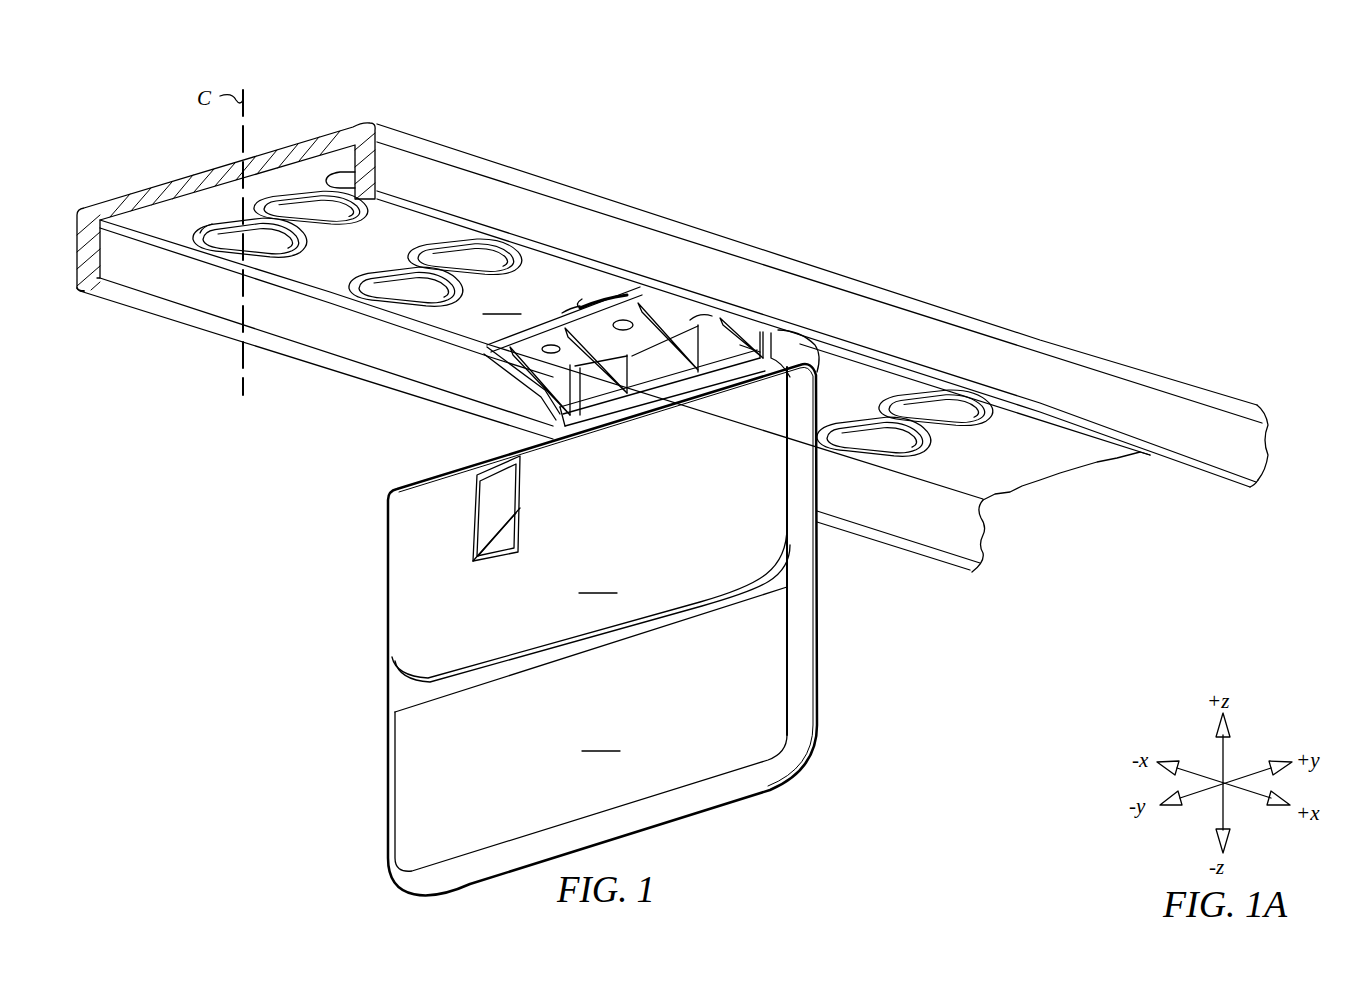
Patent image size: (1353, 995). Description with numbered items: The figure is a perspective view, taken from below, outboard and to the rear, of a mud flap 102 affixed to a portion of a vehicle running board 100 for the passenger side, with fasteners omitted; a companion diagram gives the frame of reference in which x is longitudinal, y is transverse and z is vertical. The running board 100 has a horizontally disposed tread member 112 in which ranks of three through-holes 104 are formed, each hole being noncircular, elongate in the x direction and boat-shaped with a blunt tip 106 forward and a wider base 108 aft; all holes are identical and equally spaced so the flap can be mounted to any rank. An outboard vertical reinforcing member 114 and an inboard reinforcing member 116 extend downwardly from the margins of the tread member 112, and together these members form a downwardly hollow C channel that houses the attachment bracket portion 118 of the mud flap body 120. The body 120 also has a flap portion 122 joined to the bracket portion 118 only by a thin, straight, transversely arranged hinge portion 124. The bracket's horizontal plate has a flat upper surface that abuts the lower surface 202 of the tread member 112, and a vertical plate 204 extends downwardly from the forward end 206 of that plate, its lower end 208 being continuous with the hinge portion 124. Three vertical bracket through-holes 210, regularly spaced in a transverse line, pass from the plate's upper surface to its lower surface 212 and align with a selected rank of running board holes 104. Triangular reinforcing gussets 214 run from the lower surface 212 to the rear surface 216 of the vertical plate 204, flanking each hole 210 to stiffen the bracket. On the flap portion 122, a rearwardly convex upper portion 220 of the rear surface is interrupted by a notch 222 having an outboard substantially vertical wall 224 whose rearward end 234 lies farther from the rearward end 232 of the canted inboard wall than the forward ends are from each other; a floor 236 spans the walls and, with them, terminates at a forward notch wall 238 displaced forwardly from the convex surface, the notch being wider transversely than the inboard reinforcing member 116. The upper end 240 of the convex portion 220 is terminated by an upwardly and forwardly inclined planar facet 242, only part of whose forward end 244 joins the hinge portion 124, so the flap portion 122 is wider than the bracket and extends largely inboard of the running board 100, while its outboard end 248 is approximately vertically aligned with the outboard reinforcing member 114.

The vehicle running board 100 is at (817, 339).
The mud flap 102 is at (840, 670).
The through-holes 104 is at (317, 207).
The blunt tip 106 is at (273, 267).
The wider base 108 is at (222, 252).
The tread member 112 is at (752, 156).
The outboard vertical reinforcing member 114 is at (425, 185).
The inboard reinforcing member 116 is at (135, 282).
The attachment bracket portion 118 is at (578, 305).
The mud flap body 120 is at (383, 582).
The flap portion 122 is at (591, 729).
The hinge portion 124 is at (808, 333).
The lower surface of the running board tread member 202 is at (562, 319).
The vertical plate 204 is at (780, 382).
The forward end of the horizontal plate 206 is at (787, 355).
The lower end of the vertical plate 208 is at (728, 358).
The bracket through-holes 210 is at (660, 305).
The lower surface of the horizontal plate 212 is at (700, 312).
The triangular reinforcing gussets 214 is at (543, 430).
The rear surface of the vertical plate 216 is at (640, 420).
The upper portion of the rear surface 220 is at (591, 604).
The notch 222 is at (472, 544).
The outboard wall 224 is at (498, 490).
The rearward end of the inboard wall 232 is at (470, 521).
The rearward end of the outboard wall 234 is at (520, 521).
The floor 236 is at (490, 561).
The forward notch wall 238 is at (530, 440).
The upper end of the convex portion 240 is at (400, 485).
The planar facet 242 is at (452, 475).
The forward end of the facet 244 is at (388, 495).
The outboard end of the flap portion 248 is at (821, 612).